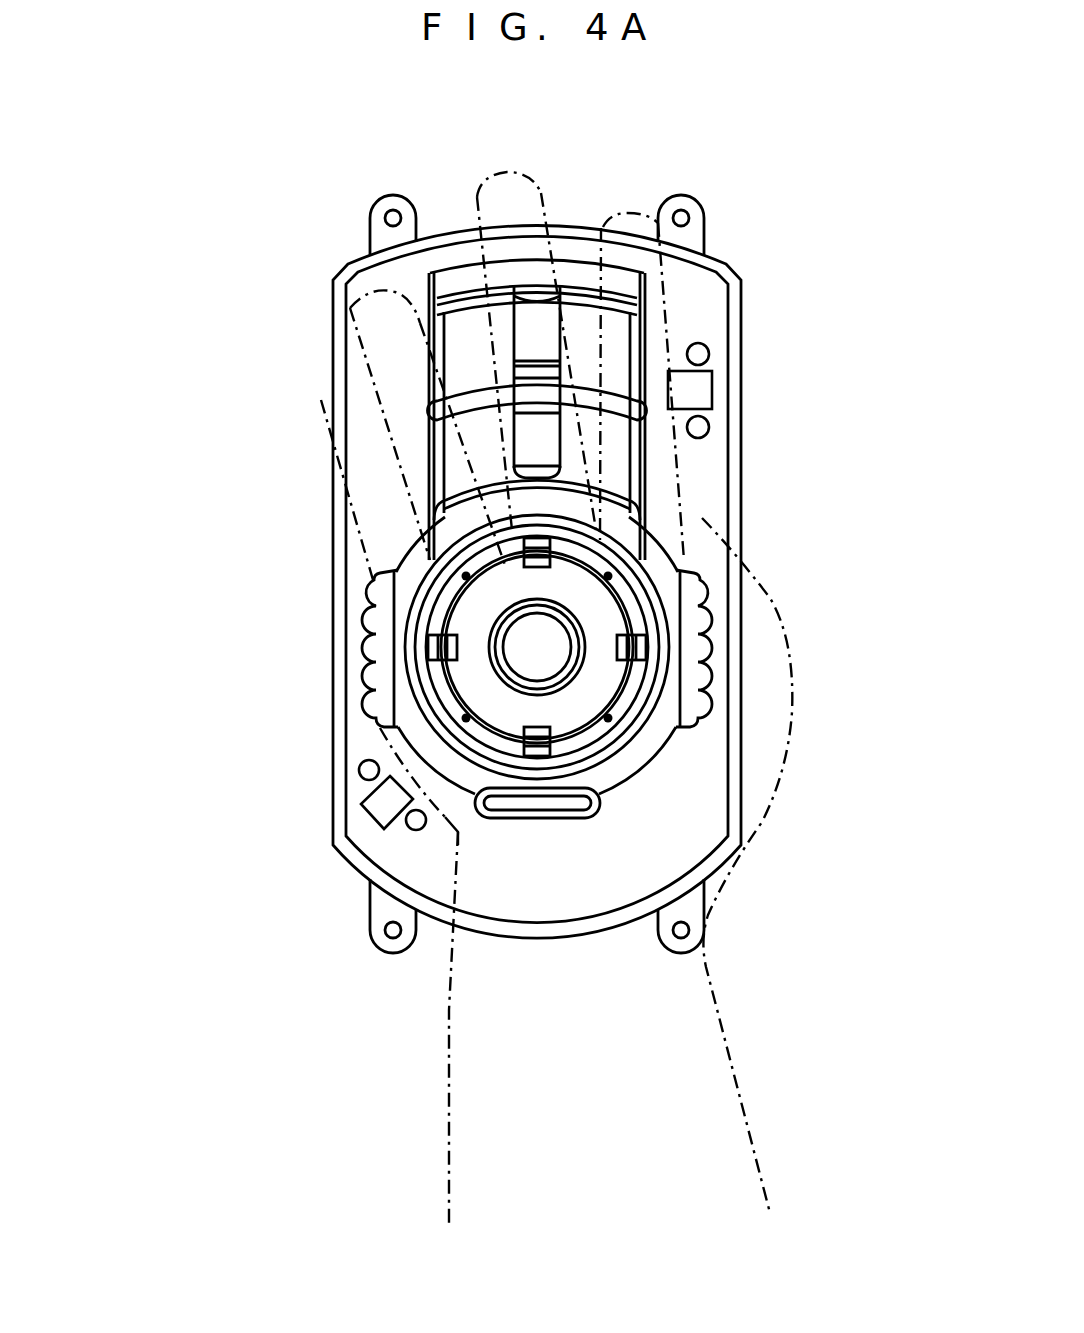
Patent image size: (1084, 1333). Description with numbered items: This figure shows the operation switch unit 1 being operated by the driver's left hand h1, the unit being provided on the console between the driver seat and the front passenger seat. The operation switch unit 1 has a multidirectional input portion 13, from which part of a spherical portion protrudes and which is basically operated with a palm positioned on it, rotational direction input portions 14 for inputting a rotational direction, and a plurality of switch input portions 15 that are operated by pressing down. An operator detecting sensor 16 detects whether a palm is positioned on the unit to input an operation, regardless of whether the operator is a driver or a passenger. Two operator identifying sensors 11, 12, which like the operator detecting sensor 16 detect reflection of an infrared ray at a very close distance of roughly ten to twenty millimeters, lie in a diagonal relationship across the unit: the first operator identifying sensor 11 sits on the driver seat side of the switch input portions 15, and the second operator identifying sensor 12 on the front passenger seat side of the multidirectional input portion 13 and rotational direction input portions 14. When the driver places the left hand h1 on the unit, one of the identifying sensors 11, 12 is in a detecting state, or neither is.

The operation switch unit 1 is at (236, 232).
The first operator identifying sensor 11 is at (697, 390).
The second operator identifying sensor 12 is at (378, 800).
The multidirectional input portion 13 is at (592, 683).
The rotational direction input portions 14 is at (385, 660).
The switch input portions 15 is at (527, 333).
The operator detecting sensor 16 is at (538, 810).
The left hand h1 is at (707, 976).